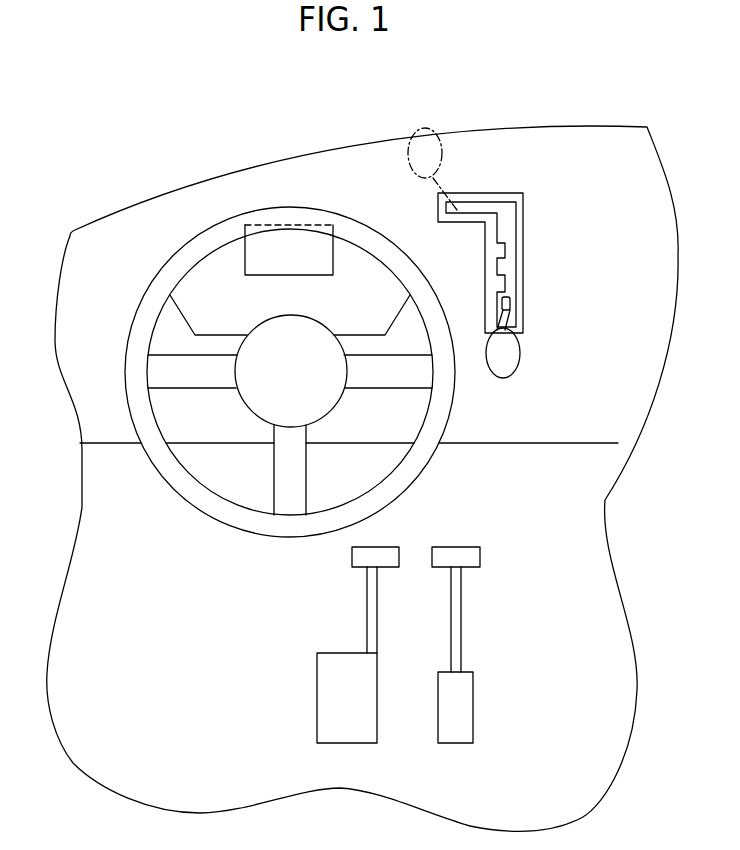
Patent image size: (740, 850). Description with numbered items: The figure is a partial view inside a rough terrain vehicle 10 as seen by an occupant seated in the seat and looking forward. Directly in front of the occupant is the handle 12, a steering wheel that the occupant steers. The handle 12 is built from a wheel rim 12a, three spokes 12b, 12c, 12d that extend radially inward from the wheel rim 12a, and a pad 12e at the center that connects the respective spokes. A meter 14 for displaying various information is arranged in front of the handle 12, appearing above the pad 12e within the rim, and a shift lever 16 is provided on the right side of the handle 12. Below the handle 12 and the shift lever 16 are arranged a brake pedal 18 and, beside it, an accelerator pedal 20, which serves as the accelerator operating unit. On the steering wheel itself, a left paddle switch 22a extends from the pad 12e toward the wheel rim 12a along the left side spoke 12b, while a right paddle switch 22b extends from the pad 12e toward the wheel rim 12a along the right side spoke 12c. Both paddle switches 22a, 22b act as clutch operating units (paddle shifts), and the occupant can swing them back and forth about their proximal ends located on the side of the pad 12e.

The rough terrain vehicle 10 is at (241, 93).
The handle 12 is at (203, 232).
The wheel rim 12a is at (138, 366).
The left side spoke 12b is at (201, 377).
The right side spoke 12c is at (379, 377).
The spoke 12d is at (292, 472).
The pad 12e is at (288, 330).
The meter 14 is at (272, 268).
The shift lever 16 is at (510, 358).
The brake pedal 18 is at (316, 690).
The accelerator pedal 20 is at (462, 706).
The left paddle switch 22a is at (168, 327).
The right paddle switch 22b is at (408, 325).